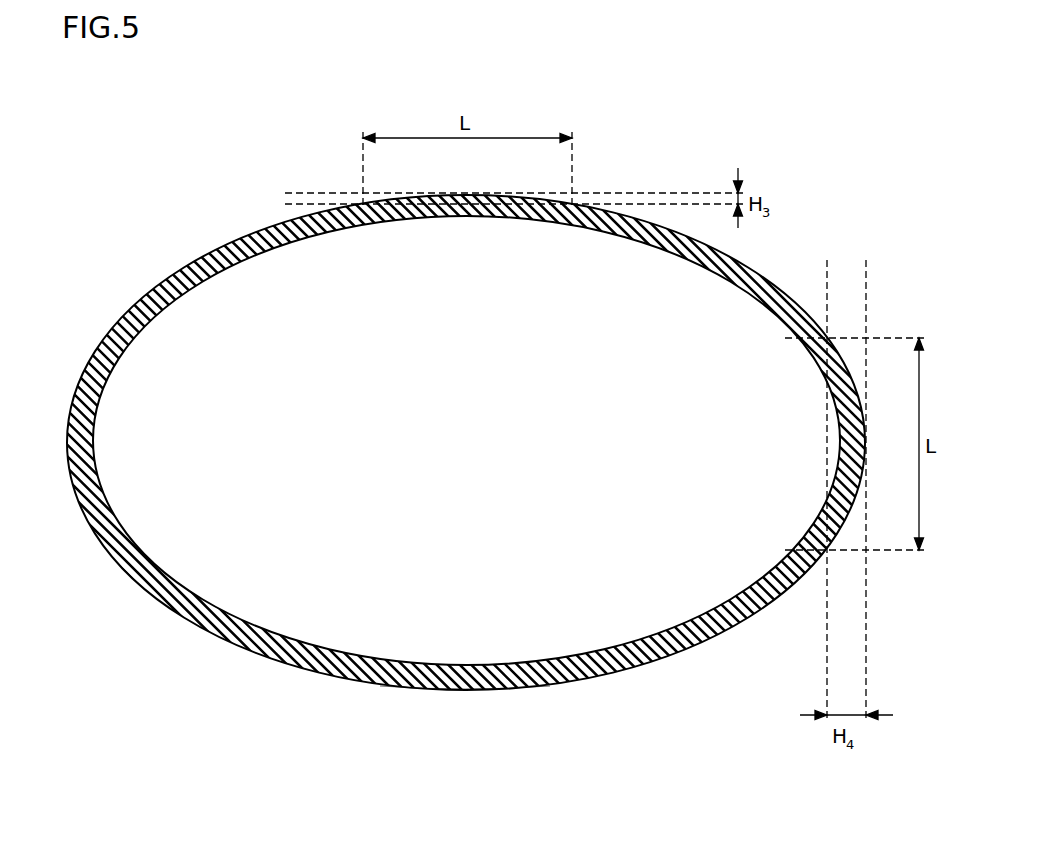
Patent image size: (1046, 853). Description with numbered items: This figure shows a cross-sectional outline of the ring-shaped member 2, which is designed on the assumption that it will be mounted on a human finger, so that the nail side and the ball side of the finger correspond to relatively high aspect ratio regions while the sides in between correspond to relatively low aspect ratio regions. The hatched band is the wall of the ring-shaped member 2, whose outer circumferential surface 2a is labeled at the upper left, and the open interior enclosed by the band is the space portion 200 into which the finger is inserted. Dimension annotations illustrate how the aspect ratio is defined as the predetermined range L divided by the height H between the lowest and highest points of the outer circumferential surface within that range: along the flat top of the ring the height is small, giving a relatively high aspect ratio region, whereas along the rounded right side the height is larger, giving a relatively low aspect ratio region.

The ring-shaped member 2 is at (523, 454).
The outer peripheral surface of tube 2a is at (210, 253).
The space portion 200 is at (467, 610).